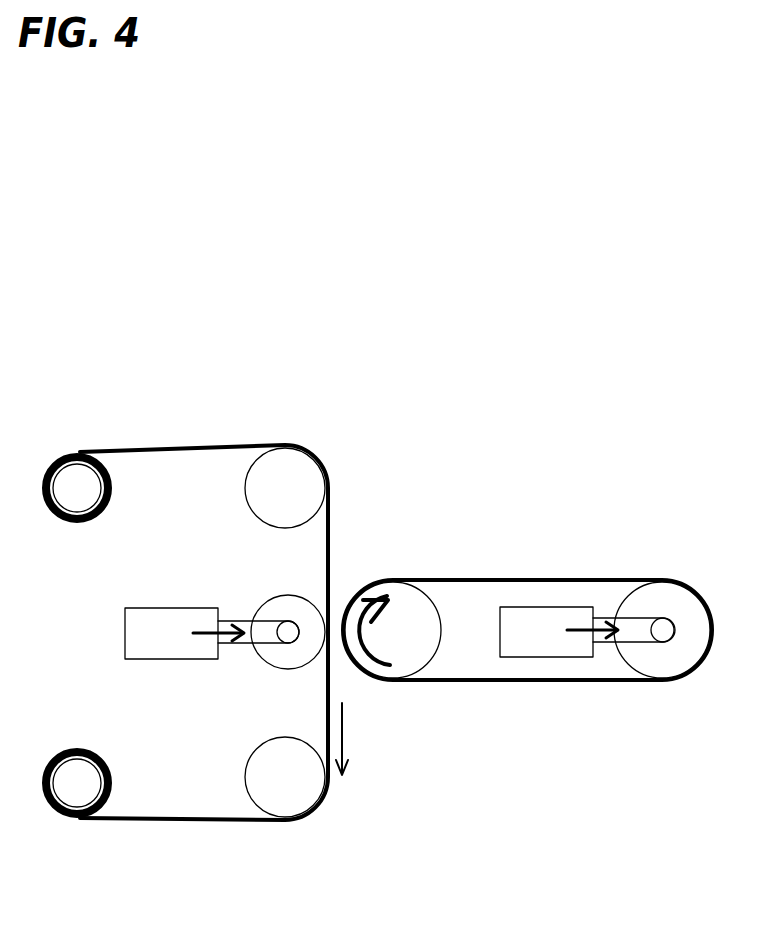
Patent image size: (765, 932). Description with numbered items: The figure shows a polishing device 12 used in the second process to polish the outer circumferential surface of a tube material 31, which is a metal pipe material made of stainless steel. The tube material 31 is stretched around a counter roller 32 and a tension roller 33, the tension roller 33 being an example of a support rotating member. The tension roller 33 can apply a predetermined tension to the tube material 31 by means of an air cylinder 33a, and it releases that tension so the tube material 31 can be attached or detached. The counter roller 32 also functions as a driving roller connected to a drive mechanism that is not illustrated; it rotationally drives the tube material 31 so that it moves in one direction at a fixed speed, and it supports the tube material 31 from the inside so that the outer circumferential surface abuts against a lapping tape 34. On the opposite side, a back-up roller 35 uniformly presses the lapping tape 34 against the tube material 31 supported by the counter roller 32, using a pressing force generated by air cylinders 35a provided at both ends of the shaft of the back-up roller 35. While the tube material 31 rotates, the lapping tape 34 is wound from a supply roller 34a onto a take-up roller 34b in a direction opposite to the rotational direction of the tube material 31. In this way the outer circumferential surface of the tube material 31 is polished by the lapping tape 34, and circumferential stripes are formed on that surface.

The polishing device 12 is at (443, 436).
The tube material 31 is at (604, 578).
The counter roller 32 is at (393, 590).
The tension roller 33 is at (663, 588).
The air cylinder 33a is at (552, 660).
The lapping tape 34 is at (221, 446).
The supply roller 34a is at (94, 486).
The take-up roller 34b is at (94, 782).
The back-up roller 35 is at (281, 604).
The air cylinders 35a is at (176, 660).